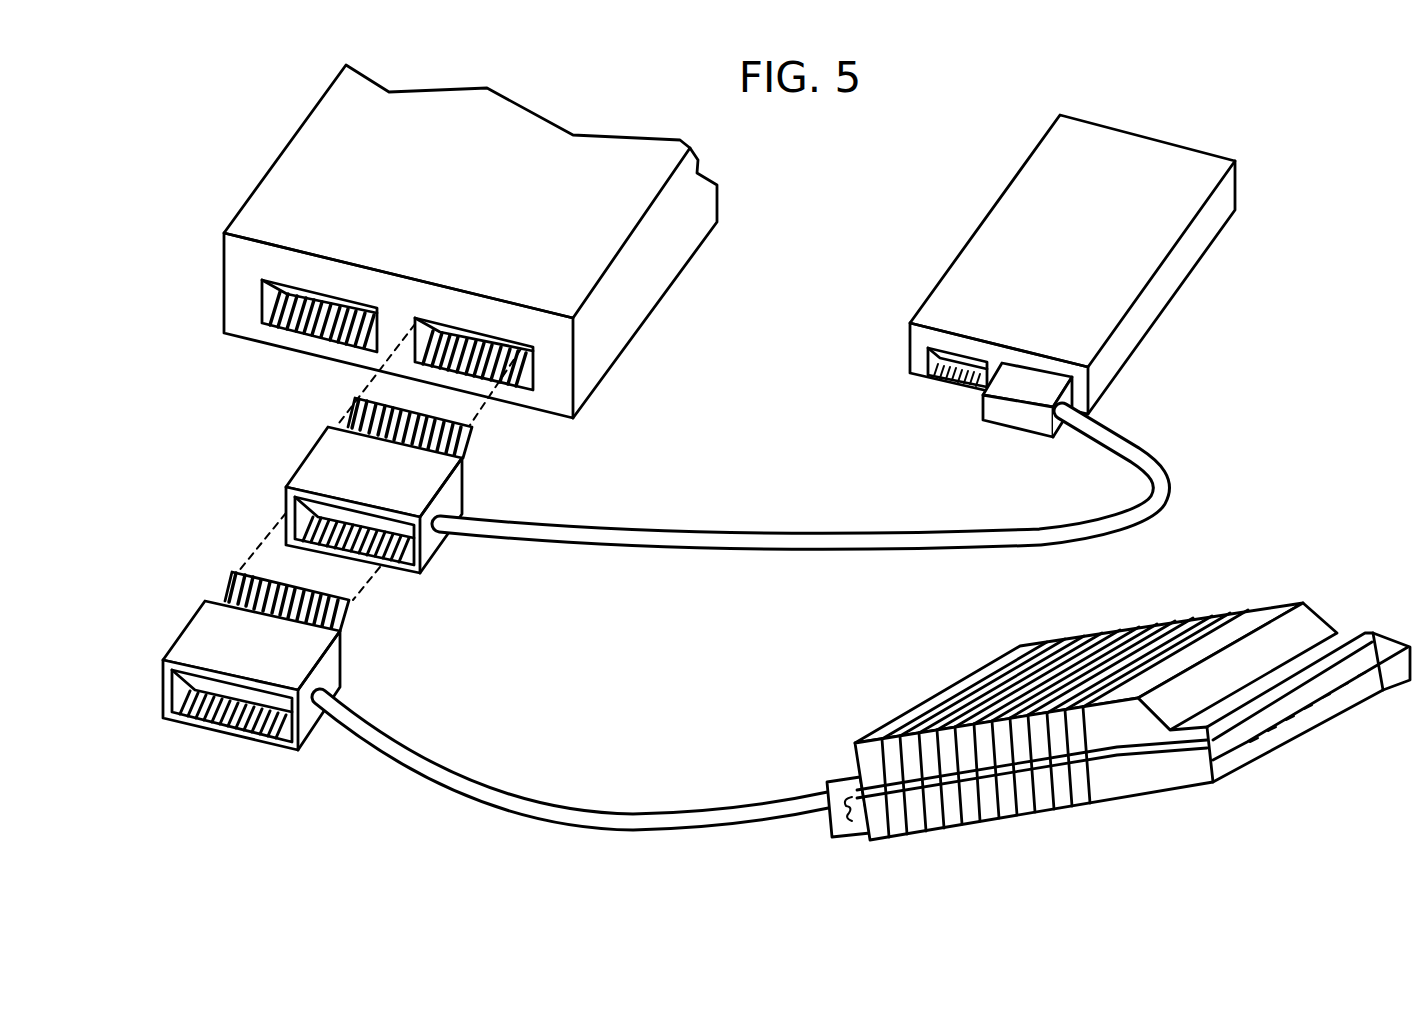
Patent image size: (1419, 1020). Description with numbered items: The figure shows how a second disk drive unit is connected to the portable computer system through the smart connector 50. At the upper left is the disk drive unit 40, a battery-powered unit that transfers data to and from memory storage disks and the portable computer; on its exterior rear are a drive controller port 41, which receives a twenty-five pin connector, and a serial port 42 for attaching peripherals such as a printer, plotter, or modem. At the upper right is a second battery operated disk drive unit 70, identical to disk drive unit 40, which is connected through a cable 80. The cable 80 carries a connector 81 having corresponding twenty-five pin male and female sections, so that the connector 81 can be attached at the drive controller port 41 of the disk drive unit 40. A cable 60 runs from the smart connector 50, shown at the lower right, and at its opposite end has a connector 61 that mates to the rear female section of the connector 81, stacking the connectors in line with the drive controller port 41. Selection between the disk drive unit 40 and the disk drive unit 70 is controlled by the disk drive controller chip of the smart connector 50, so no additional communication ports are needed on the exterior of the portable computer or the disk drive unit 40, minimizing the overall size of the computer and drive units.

The disk drive unit 40 is at (671, 326).
The drive controller port 41 is at (489, 333).
The serial RS-232 port 42 is at (317, 292).
The smart connector 50 is at (1138, 815).
The cable 60 is at (630, 806).
The connector 61 is at (307, 720).
The second battery operated disk drive unit 70 is at (1196, 328).
The cable 80 is at (828, 548).
The connector 81 is at (427, 540).